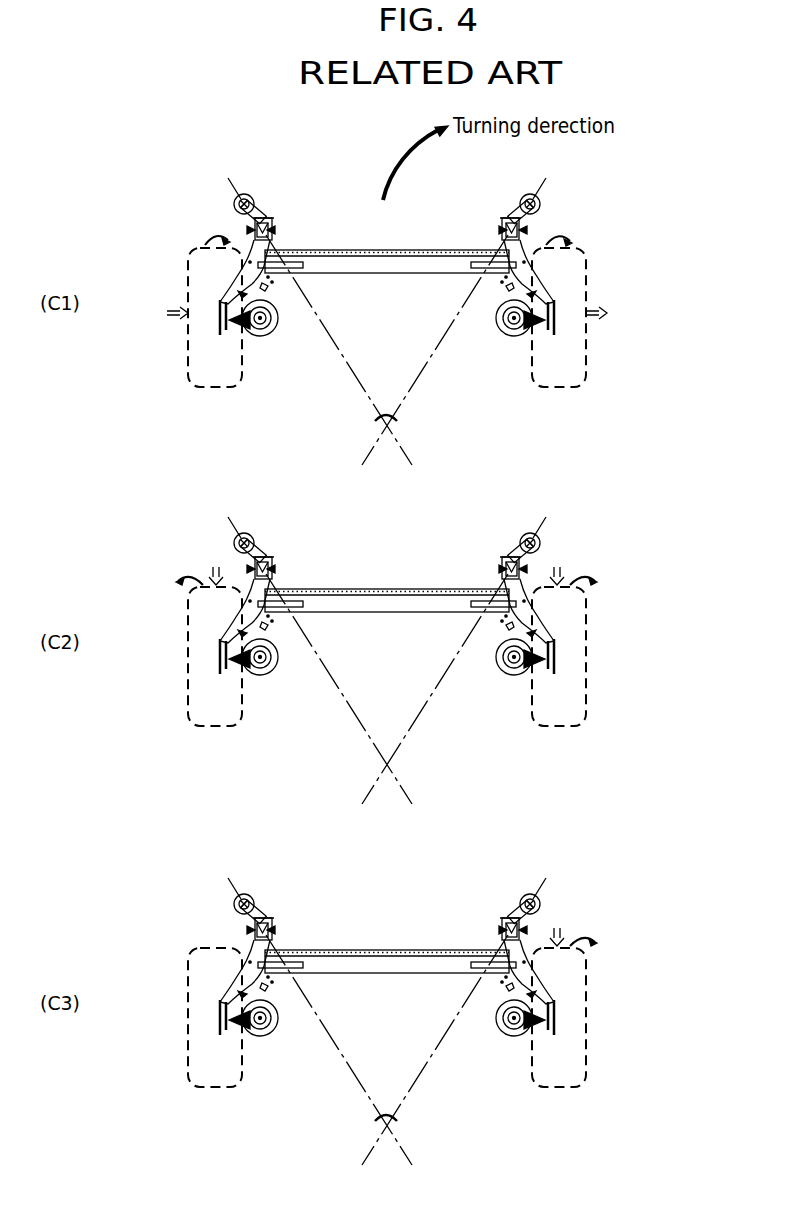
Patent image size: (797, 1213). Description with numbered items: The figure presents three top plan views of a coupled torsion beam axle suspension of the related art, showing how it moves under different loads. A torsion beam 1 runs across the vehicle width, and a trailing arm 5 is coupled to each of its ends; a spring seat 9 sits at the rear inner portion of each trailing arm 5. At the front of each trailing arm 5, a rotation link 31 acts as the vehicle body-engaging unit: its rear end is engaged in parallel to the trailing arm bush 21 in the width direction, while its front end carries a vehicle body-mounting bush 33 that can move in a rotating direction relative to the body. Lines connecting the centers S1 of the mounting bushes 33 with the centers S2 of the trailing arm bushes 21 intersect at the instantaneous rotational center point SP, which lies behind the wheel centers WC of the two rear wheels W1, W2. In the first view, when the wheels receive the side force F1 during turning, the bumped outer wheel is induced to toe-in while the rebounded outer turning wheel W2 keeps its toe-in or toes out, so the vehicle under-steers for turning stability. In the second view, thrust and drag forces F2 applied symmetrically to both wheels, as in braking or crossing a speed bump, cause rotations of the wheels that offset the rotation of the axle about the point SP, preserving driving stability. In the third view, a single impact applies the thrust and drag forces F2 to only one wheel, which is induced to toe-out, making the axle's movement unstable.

The torsion beam 1 is at (385, 276).
The trailing arm 5 is at (268, 290).
The spring seat 9 is at (276, 326).
The trailing arm bush 21 is at (272, 219).
The rotation link 31 is at (237, 219).
The vehicle body-mounting bush 33 is at (250, 196).
The center of the mounting bush S1 is at (255, 204).
The center of the trailing arm bush S2 is at (274, 231).
The wheel center WC is at (217, 312).
The rear wheel W1 is at (222, 389).
The rebounded rear outer turning wheel W2 is at (558, 389).
The side force F1 is at (387, 279).
The thrust and drag forces F2 is at (386, 743).
The instantaneous rotational center point SP is at (389, 427).